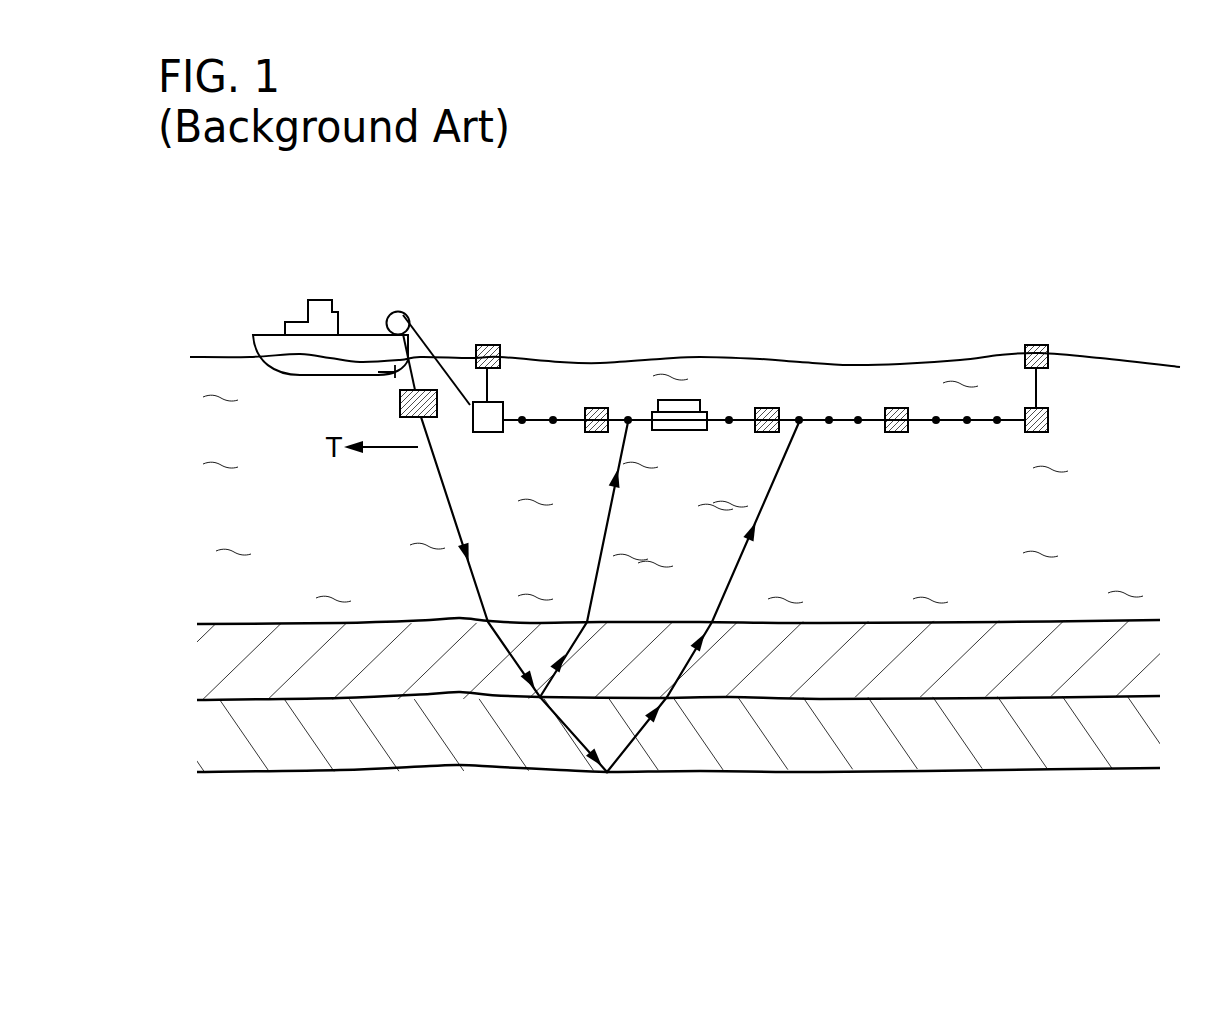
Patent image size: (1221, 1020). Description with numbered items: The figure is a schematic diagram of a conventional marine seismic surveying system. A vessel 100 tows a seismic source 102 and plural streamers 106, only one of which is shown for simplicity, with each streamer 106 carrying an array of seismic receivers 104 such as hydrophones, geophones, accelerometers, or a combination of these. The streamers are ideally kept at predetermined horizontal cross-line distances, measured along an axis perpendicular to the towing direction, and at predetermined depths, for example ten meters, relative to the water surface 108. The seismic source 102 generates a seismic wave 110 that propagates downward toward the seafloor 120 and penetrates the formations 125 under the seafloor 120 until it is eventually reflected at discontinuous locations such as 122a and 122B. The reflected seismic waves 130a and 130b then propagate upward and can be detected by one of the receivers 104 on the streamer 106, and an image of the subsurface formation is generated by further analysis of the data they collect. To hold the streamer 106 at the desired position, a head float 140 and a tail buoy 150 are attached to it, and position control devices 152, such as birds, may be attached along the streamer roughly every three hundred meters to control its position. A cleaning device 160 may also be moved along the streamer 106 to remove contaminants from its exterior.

The vessel 100 is at (357, 334).
The seismic source 102 is at (400, 405).
The seismic receivers 104 is at (729, 425).
The streamer 106 is at (931, 444).
The water surface 108 is at (1082, 357).
The seismic wave 110 is at (481, 583).
The seafloor 120 is at (980, 621).
The discontinuous location 122a is at (527, 716).
The discontinuous location 122B is at (610, 792).
The formations 125 is at (375, 773).
The reflected seismic wave 130a is at (607, 532).
The reflected seismic wave 130b is at (739, 561).
The head float 140 is at (497, 345).
The tail buoy 150 is at (1025, 351).
The position control devices 152 is at (608, 408).
The cleaning device 160 is at (685, 430).